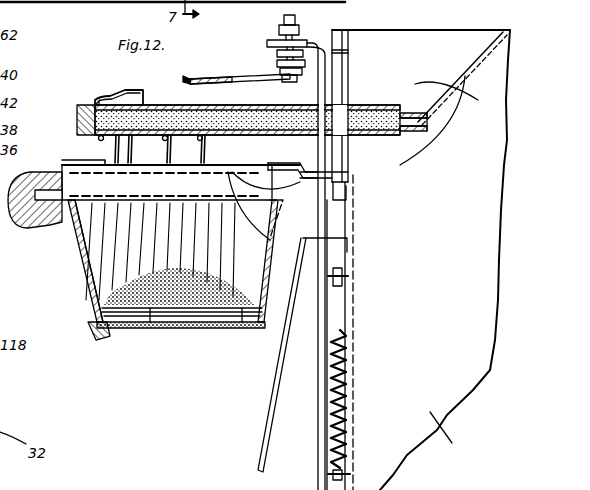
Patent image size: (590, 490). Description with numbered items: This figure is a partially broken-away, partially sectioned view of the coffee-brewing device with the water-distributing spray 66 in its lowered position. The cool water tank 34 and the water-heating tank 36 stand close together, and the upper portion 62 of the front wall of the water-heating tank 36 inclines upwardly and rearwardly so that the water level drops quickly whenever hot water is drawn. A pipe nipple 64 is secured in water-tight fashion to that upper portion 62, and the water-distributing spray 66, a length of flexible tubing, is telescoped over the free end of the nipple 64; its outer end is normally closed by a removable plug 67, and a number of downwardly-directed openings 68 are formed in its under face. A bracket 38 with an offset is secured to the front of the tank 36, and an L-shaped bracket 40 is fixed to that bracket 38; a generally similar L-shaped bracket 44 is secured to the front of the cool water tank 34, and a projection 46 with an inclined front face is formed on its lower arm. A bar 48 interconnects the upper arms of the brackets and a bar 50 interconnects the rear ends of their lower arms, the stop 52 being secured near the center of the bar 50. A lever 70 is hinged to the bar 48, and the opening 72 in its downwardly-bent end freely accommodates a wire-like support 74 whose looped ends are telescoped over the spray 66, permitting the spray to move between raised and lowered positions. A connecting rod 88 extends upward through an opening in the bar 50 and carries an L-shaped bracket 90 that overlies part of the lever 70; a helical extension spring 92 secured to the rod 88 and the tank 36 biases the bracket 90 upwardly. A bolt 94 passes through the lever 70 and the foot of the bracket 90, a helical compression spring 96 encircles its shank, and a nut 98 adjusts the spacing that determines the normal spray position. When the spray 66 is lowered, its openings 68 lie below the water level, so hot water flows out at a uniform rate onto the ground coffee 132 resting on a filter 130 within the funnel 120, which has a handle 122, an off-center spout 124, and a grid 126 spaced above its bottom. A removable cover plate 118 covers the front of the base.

The cool water tank 34 is at (421, 260).
The water-heating tank 36 is at (450, 437).
The bracket 38 is at (346, 174).
The L-shaped bracket 40 is at (336, 80).
The L-shaped bracket 44 is at (172, 196).
The projection 46 is at (104, 160).
The bar 48 is at (350, 47).
The bar 50 is at (336, 190).
The stop 52 is at (290, 163).
The upper portion of front wall 62 is at (452, 82).
The pipe nipple 64 is at (413, 125).
The water-distributing spray 66 is at (140, 100).
The removable plug 67 is at (80, 114).
The openings 68 is at (135, 132).
The lever 70 is at (227, 77).
The opening 72 is at (192, 80).
The wire-like support 74 is at (100, 100).
The connecting rod 88 is at (318, 428).
The L-shaped bracket 90 is at (326, 56).
The helical extension spring 92 is at (348, 358).
The bolt 94 is at (296, 20).
The helical compression spring 96 is at (285, 53).
The nut 98 is at (284, 30).
The removable cover plate 118 is at (262, 421).
The funnel 120 is at (256, 333).
The handle 122 is at (30, 224).
The spout 124 is at (98, 342).
The grid 126 is at (213, 318).
The filter 130 is at (78, 270).
The ground coffee 132 is at (171, 290).